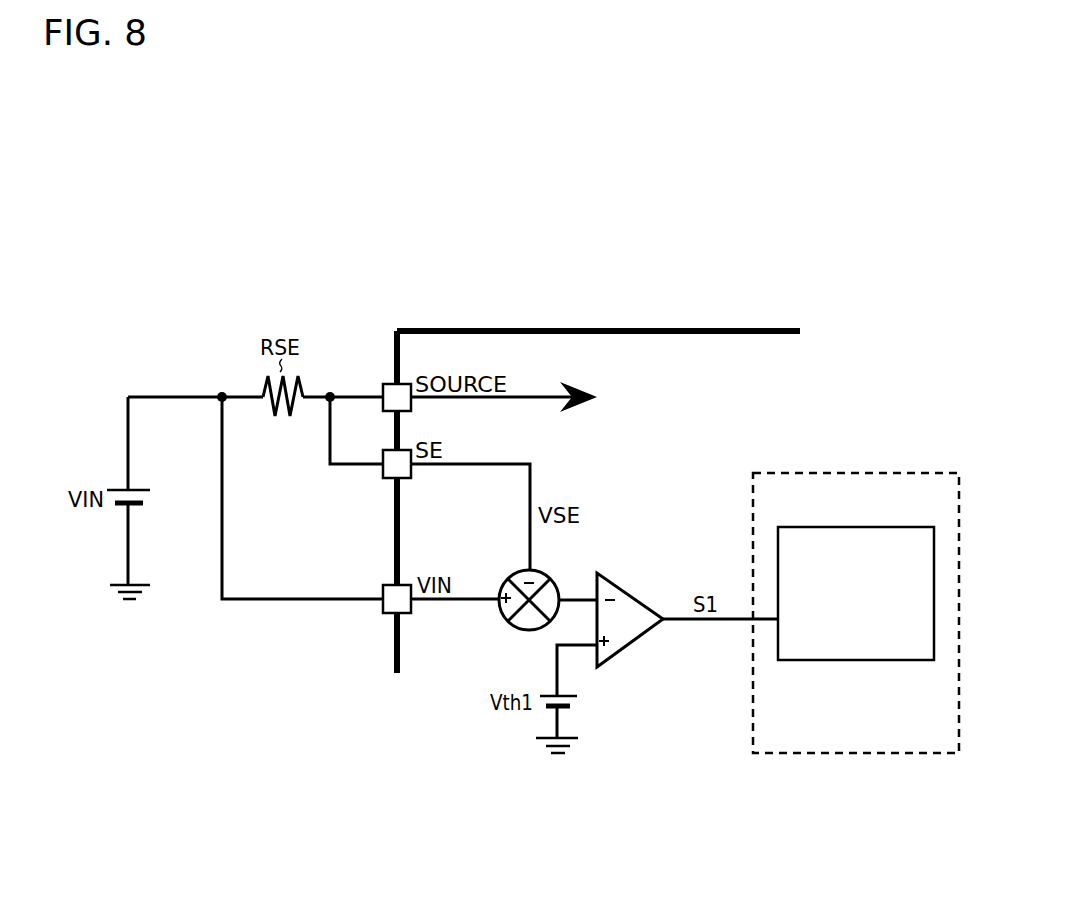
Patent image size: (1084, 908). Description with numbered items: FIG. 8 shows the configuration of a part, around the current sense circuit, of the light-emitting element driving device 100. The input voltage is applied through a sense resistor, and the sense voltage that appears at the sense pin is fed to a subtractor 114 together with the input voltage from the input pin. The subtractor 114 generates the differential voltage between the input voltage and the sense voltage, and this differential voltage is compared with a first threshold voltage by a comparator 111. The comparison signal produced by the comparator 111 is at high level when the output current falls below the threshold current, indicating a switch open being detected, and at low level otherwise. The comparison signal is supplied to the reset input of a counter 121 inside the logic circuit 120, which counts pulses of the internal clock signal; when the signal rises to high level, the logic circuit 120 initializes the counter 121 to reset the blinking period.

The light-emitting element driving device 100 is at (618, 330).
The comparator 111 is at (633, 593).
The subtractor 114 is at (509, 576).
The logic circuit 120 is at (855, 472).
The counter 121 is at (855, 526).